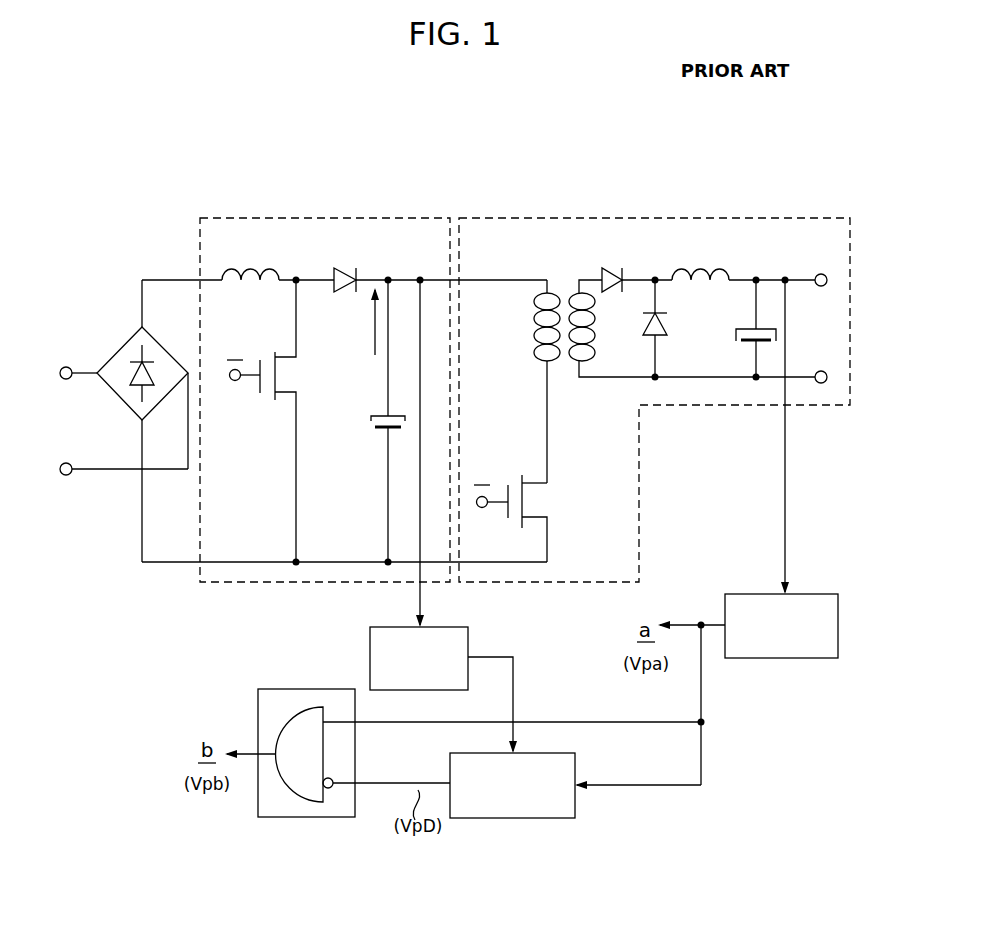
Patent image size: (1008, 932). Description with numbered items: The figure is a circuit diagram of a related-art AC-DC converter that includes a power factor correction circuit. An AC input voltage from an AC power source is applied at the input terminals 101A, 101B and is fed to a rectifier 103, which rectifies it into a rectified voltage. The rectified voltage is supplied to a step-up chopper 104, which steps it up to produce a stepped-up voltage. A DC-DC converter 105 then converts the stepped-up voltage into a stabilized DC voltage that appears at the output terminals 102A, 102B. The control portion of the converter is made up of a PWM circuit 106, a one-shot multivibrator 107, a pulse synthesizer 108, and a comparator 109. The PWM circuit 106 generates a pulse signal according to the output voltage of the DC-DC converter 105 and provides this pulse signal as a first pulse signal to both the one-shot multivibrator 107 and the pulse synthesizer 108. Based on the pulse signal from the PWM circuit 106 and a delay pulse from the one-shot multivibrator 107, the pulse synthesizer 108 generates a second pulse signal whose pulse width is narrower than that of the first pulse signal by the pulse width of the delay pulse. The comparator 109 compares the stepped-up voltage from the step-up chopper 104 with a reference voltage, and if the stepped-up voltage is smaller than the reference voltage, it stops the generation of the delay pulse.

The AC input terminal 101A is at (66, 380).
The AC input terminal 101B is at (66, 476).
The DC output terminal 102A is at (816, 275).
The DC output terminal 102B is at (820, 370).
The rectifier 103 is at (120, 350).
The step-up chopper 104 is at (318, 236).
The DC-DC converter 105 is at (657, 236).
The PWM circuit 106 is at (817, 593).
The one-shot multivibrator 107 is at (507, 818).
The pulse synthesizer 108 is at (254, 686).
The comparator 109 is at (370, 655).